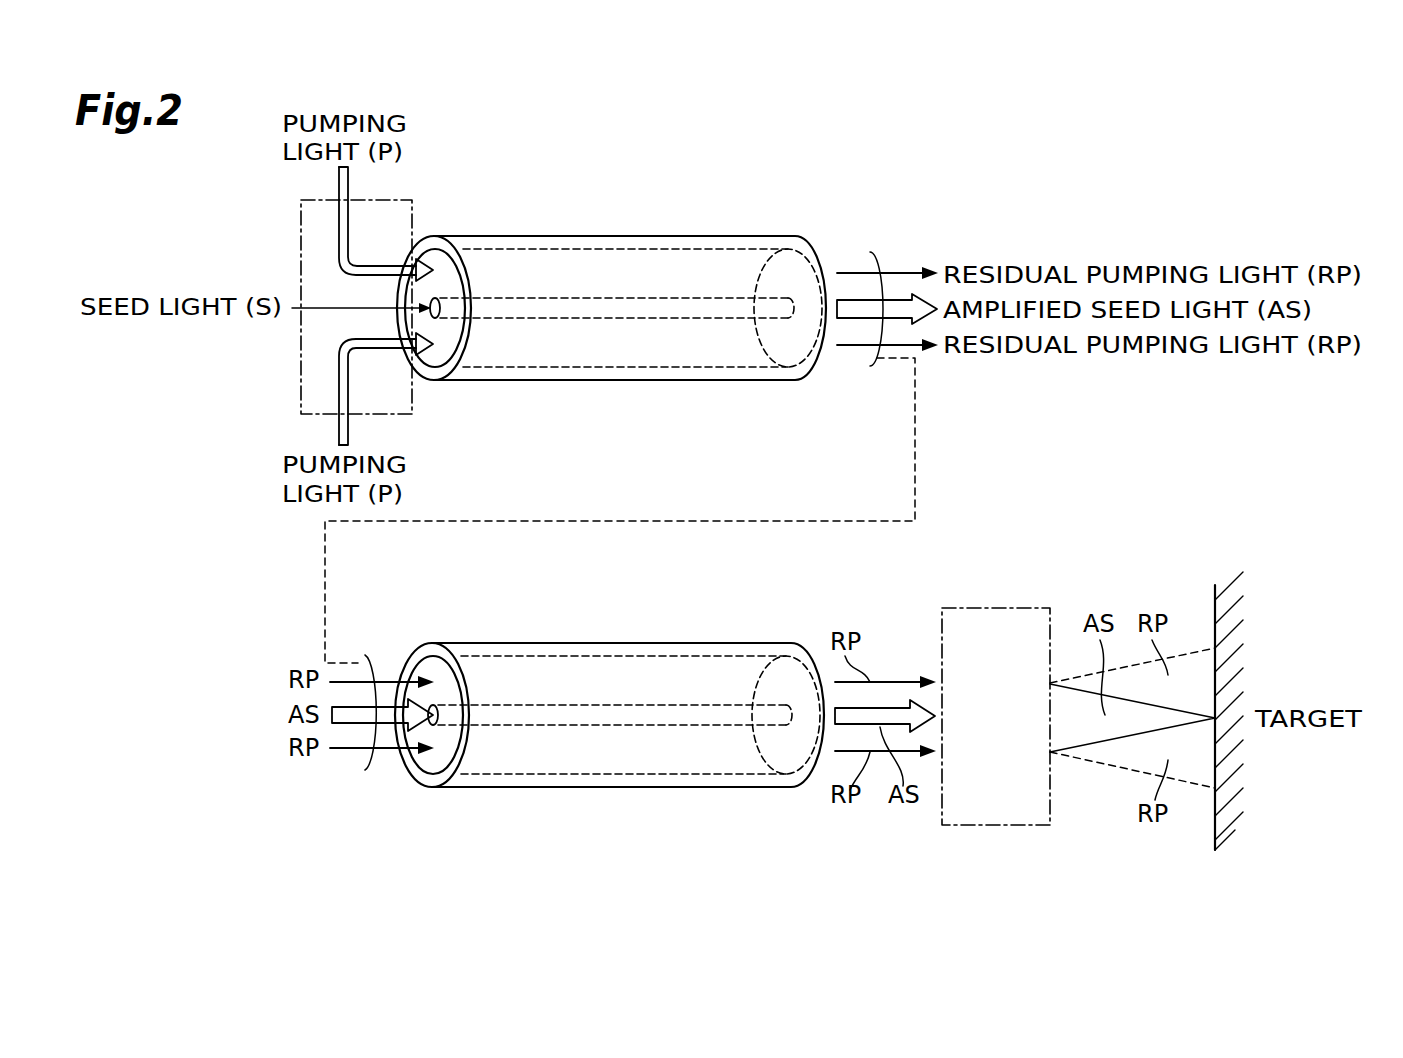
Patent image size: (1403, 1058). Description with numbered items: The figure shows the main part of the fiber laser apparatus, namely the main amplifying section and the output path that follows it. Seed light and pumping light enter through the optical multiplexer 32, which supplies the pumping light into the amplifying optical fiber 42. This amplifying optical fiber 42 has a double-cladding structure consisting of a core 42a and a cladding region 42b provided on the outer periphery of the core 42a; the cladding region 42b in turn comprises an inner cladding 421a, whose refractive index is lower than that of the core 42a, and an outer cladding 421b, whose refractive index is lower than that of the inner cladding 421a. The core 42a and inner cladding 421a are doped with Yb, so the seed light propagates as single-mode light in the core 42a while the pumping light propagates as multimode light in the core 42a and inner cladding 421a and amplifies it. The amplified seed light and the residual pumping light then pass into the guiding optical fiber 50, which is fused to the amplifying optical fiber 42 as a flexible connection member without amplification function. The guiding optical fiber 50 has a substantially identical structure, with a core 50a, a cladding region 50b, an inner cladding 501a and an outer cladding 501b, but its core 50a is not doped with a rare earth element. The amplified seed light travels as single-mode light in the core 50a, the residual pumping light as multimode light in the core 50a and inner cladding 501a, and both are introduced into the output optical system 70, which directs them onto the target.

The optical multiplexer 32 is at (301, 233).
The amplifying optical fiber 42 is at (611, 309).
The core 42a is at (632, 307).
The cladding region 42b is at (611, 352).
The inner cladding 421a is at (625, 343).
The outer cladding 421b is at (617, 372).
The guiding optical fiber 50 is at (609, 716).
The core 50a is at (610, 767).
The cladding region 50b is at (609, 759).
The inner cladding 501a is at (611, 754).
The outer cladding 501b is at (609, 759).
The output optical system 70 is at (942, 645).